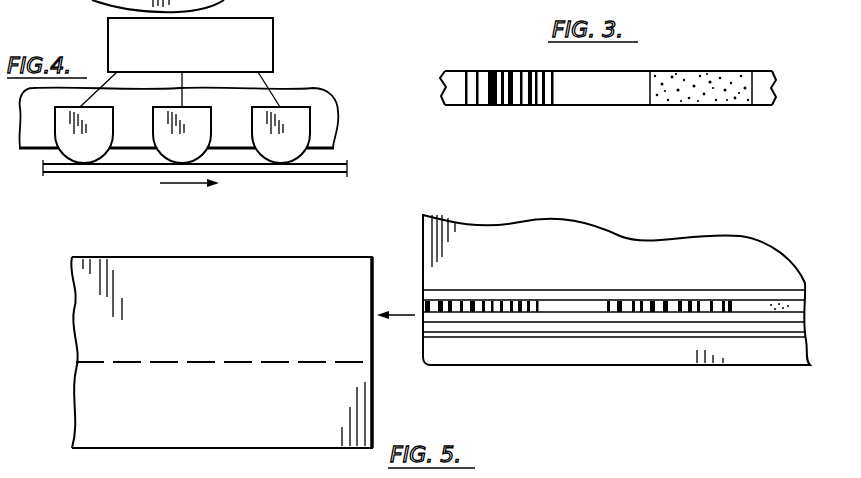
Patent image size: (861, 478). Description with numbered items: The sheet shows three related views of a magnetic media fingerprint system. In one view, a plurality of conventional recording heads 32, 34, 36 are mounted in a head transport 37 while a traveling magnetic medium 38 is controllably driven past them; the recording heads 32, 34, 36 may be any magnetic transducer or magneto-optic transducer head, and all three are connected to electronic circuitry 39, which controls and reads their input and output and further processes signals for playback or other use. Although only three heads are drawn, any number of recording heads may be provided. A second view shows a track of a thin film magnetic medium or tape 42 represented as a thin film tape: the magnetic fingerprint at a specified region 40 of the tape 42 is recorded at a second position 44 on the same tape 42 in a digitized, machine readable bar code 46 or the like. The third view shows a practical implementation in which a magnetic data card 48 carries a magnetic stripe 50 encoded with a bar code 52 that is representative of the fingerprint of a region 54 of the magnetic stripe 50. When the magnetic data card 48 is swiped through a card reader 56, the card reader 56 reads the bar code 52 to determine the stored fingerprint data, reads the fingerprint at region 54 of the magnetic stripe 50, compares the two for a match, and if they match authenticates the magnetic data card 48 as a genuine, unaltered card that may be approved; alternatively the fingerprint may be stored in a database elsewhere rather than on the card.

In FIG. 4, the recording head 32 is at (83, 152).
In FIG. 4, the recording head 34 is at (173, 152).
In FIG. 4, the recording head 36 is at (281, 155).
In FIG. 4, the head transport 37 is at (303, 96).
In FIG. 4, the traveling magnetic medium 38 is at (325, 176).
In FIG. 4, the electronic circuitry 39 is at (280, 32).
In FIG. 3, the specified region 40 is at (697, 80).
In FIG. 3, the thin film magnetic medium or tape 42 is at (774, 66).
In FIG. 3, the second position 44 is at (494, 68).
In FIG. 3, the machine readable bar code 46 is at (500, 92).
In FIG. 5, the magnetic data card 48 is at (597, 360).
In FIG. 5, the magnetic stripe 50 is at (528, 296).
In FIG. 5, the bar code 52 is at (657, 303).
In FIG. 5, the region of magnetic stripe 54 is at (783, 303).
In FIG. 5, the card reader 56 is at (352, 380).